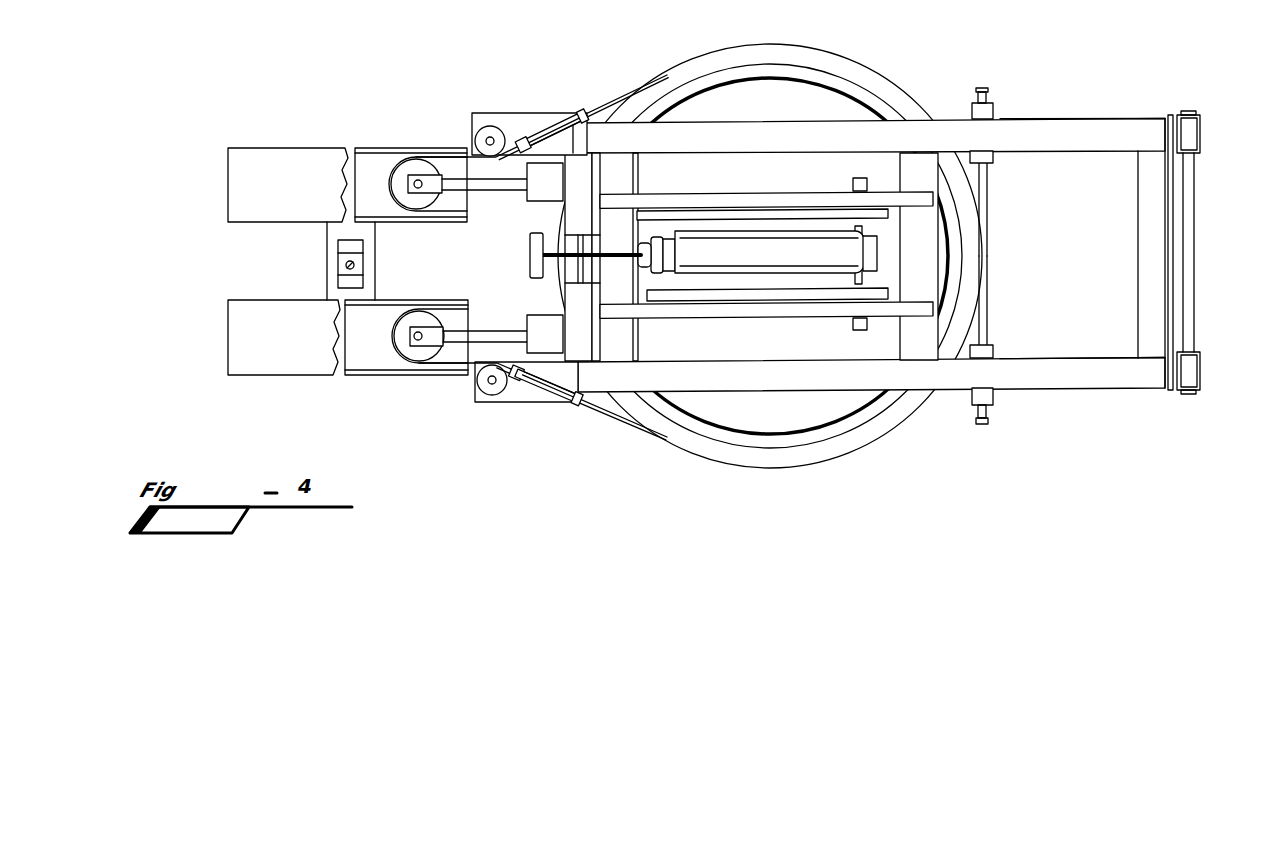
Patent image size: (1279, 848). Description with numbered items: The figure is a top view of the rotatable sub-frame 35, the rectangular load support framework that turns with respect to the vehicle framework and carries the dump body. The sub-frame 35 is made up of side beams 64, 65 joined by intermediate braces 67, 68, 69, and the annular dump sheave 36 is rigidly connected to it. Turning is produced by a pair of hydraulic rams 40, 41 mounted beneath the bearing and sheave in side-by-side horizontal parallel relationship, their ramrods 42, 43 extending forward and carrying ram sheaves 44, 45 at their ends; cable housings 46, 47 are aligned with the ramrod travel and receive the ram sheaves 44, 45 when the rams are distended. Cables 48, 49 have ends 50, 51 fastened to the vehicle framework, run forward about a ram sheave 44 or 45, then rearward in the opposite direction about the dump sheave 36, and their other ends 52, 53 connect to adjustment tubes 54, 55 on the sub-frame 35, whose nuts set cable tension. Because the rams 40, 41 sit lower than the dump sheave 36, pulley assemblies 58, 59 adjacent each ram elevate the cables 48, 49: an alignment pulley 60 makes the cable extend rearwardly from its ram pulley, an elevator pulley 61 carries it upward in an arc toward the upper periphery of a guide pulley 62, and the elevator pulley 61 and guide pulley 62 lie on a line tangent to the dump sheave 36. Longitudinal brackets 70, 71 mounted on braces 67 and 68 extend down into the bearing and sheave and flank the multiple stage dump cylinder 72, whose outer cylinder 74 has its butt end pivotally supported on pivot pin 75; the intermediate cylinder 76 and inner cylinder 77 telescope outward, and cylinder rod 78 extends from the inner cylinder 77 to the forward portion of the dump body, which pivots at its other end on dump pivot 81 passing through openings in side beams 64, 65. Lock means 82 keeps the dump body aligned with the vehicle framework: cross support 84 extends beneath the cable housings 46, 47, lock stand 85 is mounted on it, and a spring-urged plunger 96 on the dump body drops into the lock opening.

The sub-frame 35 is at (1098, 120).
The dump sheave 36 is at (806, 466).
The hydraulic ram 40 is at (535, 190).
The hydraulic ram 41 is at (553, 323).
The ramrod 42 is at (497, 185).
The ramrod 43 is at (458, 344).
The ram sheave 44 is at (408, 170).
The ram sheave 45 is at (405, 345).
The cable housing 46 is at (279, 153).
The cable housing 47 is at (265, 317).
The cable 48 is at (611, 100).
The cable 49 is at (612, 416).
The cable end 50 is at (531, 251).
The cable end 51 is at (517, 308).
The cable end 52 is at (988, 325).
The cable end 53 is at (988, 193).
The adjustment tube 54 is at (988, 353).
The adjustment tube 55 is at (990, 158).
The pulley assembly 58 is at (545, 261).
The pulley assembly 59 is at (549, 432).
The alignment pulley 60 is at (490, 133).
The elevator pulley 61 is at (540, 130).
The guide pulley 62 is at (572, 404).
The side beam 64 is at (1067, 143).
The side beam 65 is at (1057, 357).
The brace 67 is at (580, 177).
The intermediate brace 68 is at (923, 162).
The brace 69 is at (1140, 240).
The longitudinal bracket 70 is at (700, 204).
The longitudinal bracket 71 is at (730, 318).
The dump cylinder 72 is at (776, 202).
The outer cylinder 74 is at (745, 247).
The pivot pin 75 is at (873, 178).
The intermediate cylinder 76 is at (673, 232).
The inner cylinder 77 is at (645, 228).
The cylinder rod 78 is at (620, 258).
The dump pivot 81 is at (1190, 193).
The lock means 82 is at (333, 260).
The cross support 84 is at (367, 232).
The lock stand 85 is at (348, 243).
The plunger 96 is at (345, 267).